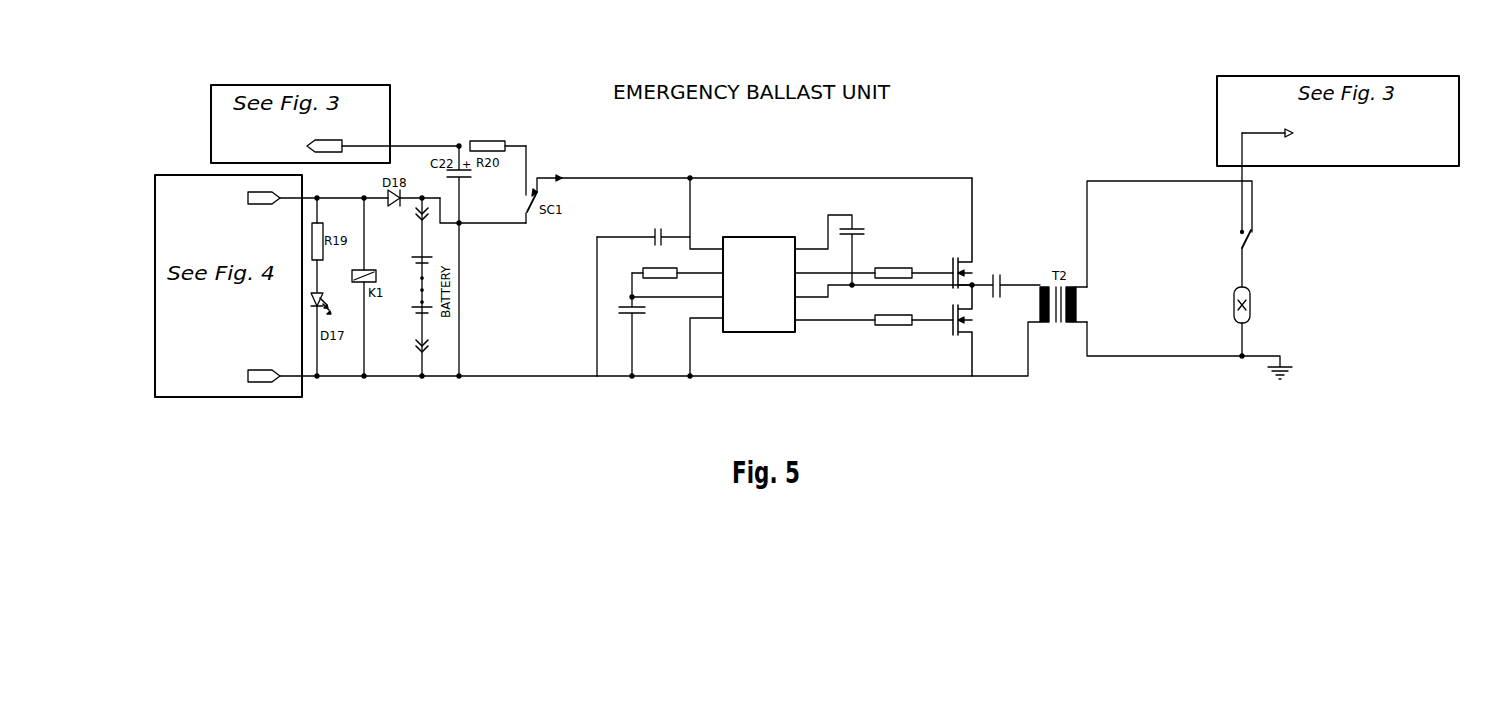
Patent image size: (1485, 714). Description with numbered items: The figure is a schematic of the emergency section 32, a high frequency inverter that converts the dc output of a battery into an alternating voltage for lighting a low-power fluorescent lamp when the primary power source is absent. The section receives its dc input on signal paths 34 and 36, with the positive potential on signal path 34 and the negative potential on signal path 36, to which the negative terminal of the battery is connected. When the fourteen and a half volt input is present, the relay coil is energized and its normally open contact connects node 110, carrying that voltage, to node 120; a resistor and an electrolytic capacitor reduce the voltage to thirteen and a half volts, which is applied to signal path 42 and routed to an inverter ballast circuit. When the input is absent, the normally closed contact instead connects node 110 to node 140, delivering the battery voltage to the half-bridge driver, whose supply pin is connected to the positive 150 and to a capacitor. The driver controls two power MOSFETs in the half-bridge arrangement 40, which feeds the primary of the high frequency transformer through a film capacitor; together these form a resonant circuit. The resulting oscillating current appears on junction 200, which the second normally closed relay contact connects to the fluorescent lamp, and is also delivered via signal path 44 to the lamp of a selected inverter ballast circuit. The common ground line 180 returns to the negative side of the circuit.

The emergency section 32 is at (784, 261).
The signal path 34 is at (289, 190).
The signal path 36 is at (405, 385).
The half-bridge arrangement 40 is at (986, 277).
The signal path 42 is at (353, 139).
The signal path 44 is at (1322, 126).
The node 110 is at (521, 230).
The node 120 is at (521, 162).
The node 140 is at (613, 175).
The positive 150 is at (824, 169).
The common return line 180 is at (818, 359).
The junction 200 is at (1189, 256).